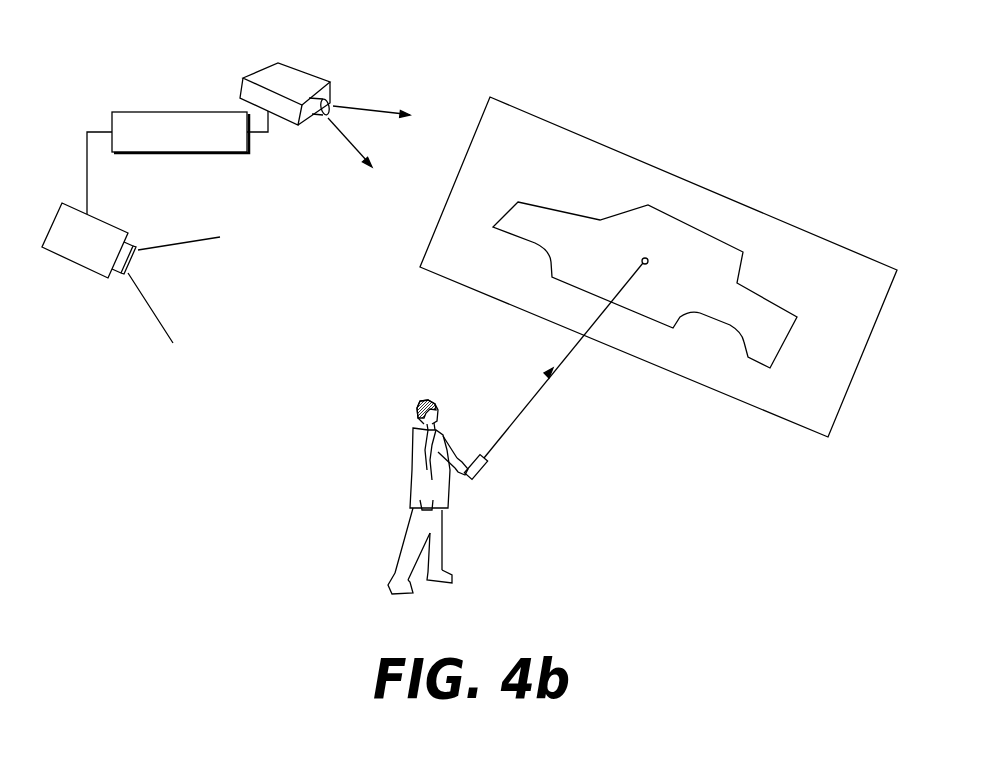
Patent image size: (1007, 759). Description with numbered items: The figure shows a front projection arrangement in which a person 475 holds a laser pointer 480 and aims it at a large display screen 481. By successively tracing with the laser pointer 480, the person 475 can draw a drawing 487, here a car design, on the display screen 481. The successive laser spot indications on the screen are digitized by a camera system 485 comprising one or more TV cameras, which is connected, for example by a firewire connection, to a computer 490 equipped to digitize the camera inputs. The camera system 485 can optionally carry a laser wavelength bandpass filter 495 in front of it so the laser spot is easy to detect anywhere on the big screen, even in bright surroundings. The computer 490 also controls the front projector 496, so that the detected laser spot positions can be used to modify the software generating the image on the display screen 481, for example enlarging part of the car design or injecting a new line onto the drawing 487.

The computer 490 is at (168, 112).
The front projector 496 is at (322, 78).
The camera system 485 is at (67, 260).
The laser wavelength bandpass filter 495 is at (137, 245).
The display screen 481 is at (618, 163).
The drawing 487 is at (787, 348).
The laser pointer 480 is at (487, 462).
The person 475 is at (452, 540).